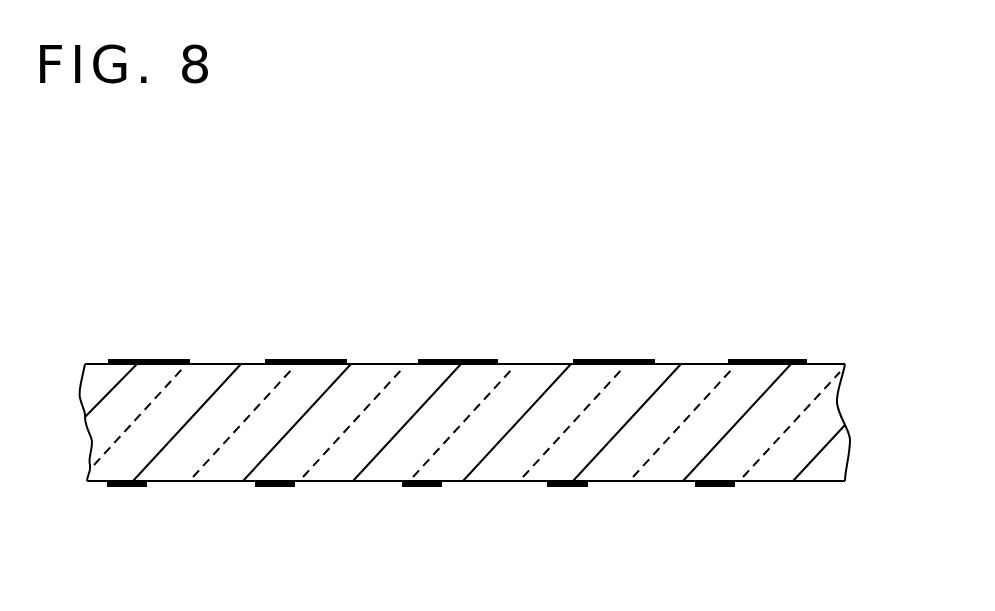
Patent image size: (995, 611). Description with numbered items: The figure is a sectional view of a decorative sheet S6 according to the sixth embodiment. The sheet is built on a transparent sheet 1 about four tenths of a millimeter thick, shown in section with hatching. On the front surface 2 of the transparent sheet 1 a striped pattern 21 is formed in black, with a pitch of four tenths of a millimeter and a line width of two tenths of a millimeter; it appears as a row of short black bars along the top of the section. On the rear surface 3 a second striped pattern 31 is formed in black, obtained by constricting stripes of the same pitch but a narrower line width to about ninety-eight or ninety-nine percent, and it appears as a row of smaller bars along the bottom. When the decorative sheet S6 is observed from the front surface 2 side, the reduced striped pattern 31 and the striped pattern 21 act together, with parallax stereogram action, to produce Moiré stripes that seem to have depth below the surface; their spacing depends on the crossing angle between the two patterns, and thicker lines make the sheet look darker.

The decorative sheet S6 is at (672, 263).
The transparent sheet 1 is at (833, 412).
The front surface 2 is at (832, 358).
The striped pattern 21 is at (760, 358).
The rear surface 3 is at (812, 483).
The striped pattern 31 is at (715, 488).